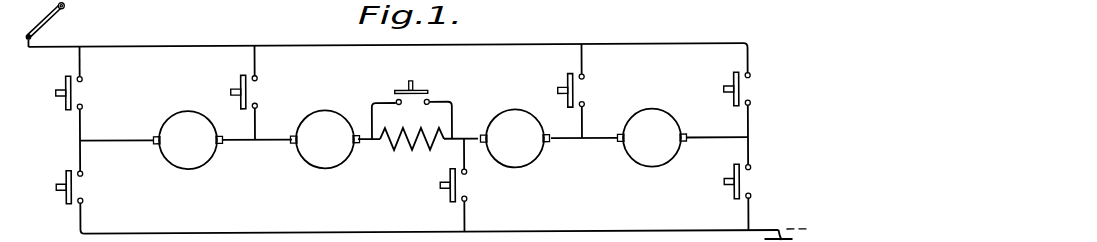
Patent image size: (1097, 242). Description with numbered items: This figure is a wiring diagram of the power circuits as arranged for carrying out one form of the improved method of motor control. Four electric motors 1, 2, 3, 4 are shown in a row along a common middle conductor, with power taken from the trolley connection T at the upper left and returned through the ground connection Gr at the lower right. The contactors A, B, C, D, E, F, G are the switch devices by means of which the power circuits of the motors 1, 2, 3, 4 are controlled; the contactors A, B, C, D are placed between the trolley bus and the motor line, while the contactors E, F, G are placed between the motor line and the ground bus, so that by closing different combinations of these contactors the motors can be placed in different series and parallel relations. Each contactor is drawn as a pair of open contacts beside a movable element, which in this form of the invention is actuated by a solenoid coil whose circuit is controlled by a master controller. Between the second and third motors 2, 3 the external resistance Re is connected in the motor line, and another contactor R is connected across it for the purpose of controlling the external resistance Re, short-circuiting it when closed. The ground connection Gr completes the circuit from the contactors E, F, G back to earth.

The trolley connection T is at (45, 25).
The contactor A is at (75, 93).
The contactor B is at (250, 92).
The contactor C is at (577, 90).
The contactor D is at (744, 89).
The contactor E is at (75, 187).
The contactor F is at (458, 185).
The contactor G is at (744, 181).
The electric motor 1 is at (183, 166).
The electric motor 2 is at (323, 160).
The electric motor 3 is at (513, 160).
The electric motor 4 is at (652, 160).
The contactor R is at (412, 110).
The external resistance Re is at (417, 146).
The ground connection Gr is at (785, 224).